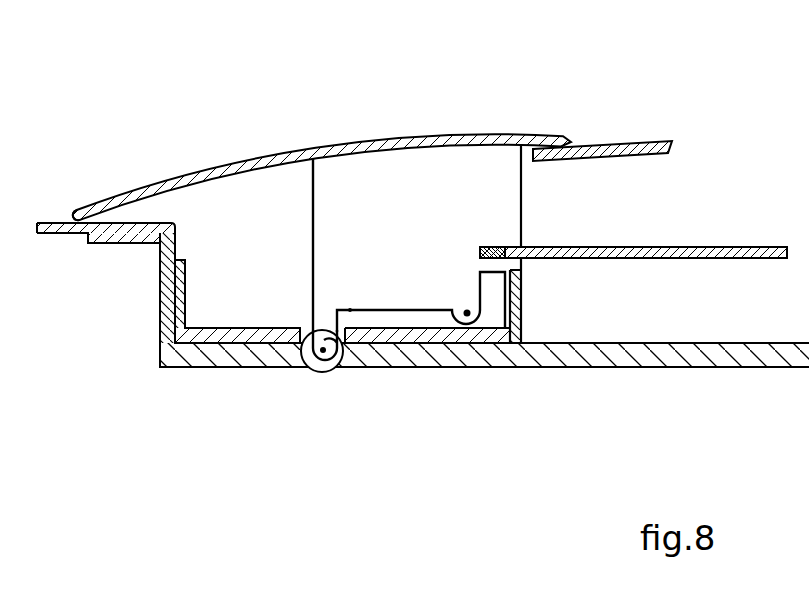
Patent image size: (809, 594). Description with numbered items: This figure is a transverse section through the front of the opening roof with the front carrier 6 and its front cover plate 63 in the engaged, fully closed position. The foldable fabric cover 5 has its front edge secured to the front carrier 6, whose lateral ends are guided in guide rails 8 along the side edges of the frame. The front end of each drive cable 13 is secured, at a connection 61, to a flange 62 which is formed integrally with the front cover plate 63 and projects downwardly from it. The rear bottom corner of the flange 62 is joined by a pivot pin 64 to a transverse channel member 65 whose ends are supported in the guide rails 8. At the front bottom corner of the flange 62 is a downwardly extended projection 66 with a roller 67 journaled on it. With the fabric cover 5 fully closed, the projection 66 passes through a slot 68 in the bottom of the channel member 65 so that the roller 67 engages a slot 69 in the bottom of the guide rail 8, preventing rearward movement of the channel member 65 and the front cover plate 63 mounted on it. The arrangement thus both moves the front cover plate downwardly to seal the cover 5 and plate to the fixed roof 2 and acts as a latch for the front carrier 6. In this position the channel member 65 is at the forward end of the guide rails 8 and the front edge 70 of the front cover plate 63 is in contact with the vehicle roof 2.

The fixed roof 2 is at (58, 235).
The foldable fabric cover 5 is at (612, 148).
The front carrier 6 is at (453, 118).
The guide rail 8 is at (725, 352).
The cable 13 is at (700, 247).
The connection 61 is at (492, 247).
The flange 62 is at (313, 220).
The front cover plate 63 is at (348, 150).
The pivot pin 64 is at (457, 330).
The transverse channel member 65 is at (512, 342).
The downwardly extended projection 66 is at (312, 367).
The roller 67 is at (328, 361).
The slot 68 is at (294, 343).
The slot 69 is at (343, 362).
The front edge 70 is at (84, 205).